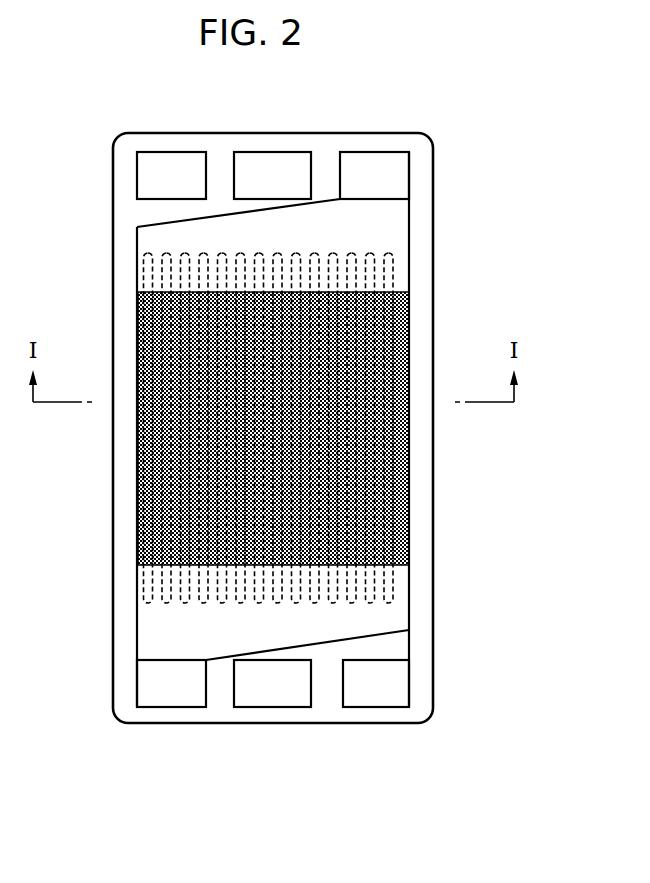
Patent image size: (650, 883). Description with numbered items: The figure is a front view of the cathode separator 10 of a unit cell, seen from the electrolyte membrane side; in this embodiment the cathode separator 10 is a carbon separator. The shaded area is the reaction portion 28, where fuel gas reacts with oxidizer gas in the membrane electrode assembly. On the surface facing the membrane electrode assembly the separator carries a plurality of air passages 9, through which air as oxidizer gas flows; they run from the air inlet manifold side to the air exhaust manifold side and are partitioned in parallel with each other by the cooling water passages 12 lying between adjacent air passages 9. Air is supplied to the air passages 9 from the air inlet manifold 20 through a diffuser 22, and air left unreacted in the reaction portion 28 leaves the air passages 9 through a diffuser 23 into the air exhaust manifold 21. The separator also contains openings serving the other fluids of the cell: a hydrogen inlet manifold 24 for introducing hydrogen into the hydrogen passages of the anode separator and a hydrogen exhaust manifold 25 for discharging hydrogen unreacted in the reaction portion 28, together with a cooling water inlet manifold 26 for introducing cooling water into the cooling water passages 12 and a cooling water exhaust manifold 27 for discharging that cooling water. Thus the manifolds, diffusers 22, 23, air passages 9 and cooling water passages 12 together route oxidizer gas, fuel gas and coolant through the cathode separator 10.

The cathode separator 10 is at (460, 94).
The reaction portion 28 is at (137, 528).
The diffuser 22 is at (375, 233).
The diffuser 23 is at (383, 620).
The hydrogen exhaust manifold 25 is at (170, 175).
The cooling water inlet manifold 26 is at (274, 175).
The air inlet manifold 20 is at (373, 175).
The air exhaust manifold 21 is at (170, 690).
The cooling water exhaust manifold 27 is at (275, 690).
The hydrogen inlet manifold 24 is at (373, 690).
The air passages 9 is at (365, 281).
The cooling water passages 12 is at (355, 262).